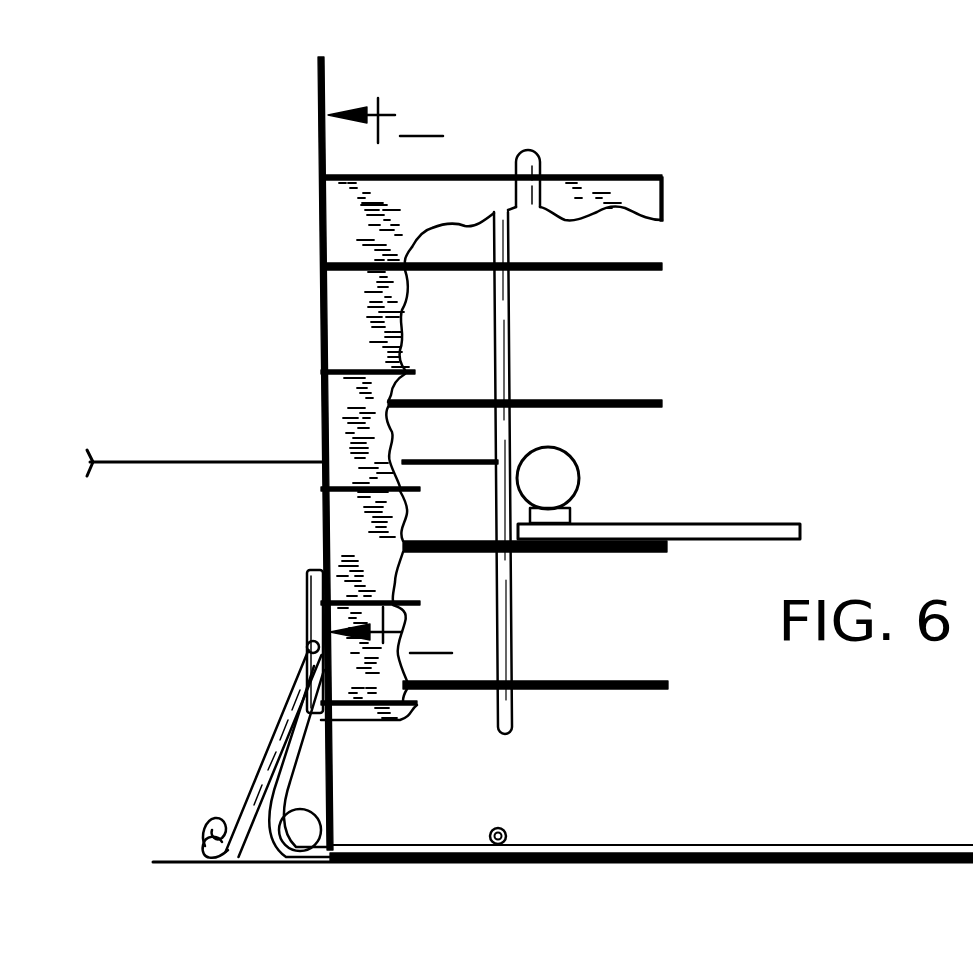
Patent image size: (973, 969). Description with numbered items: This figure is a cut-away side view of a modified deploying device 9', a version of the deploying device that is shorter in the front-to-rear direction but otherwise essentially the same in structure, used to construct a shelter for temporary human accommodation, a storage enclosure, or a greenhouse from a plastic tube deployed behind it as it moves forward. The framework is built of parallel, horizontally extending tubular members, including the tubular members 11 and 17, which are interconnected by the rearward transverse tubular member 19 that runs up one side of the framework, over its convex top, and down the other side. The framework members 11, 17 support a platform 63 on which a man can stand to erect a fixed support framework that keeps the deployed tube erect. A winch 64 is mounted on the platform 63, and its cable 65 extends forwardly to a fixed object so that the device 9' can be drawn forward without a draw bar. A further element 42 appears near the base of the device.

The modified deploying device 9' is at (563, 459).
The rearward transverse tubular member 19 is at (511, 632).
The cable 65 is at (160, 462).
The winch 64 is at (562, 483).
The platform 63 is at (733, 524).
The tubular member 11 is at (627, 553).
The tubular member 17 is at (582, 567).
The base foot 42 is at (175, 862).